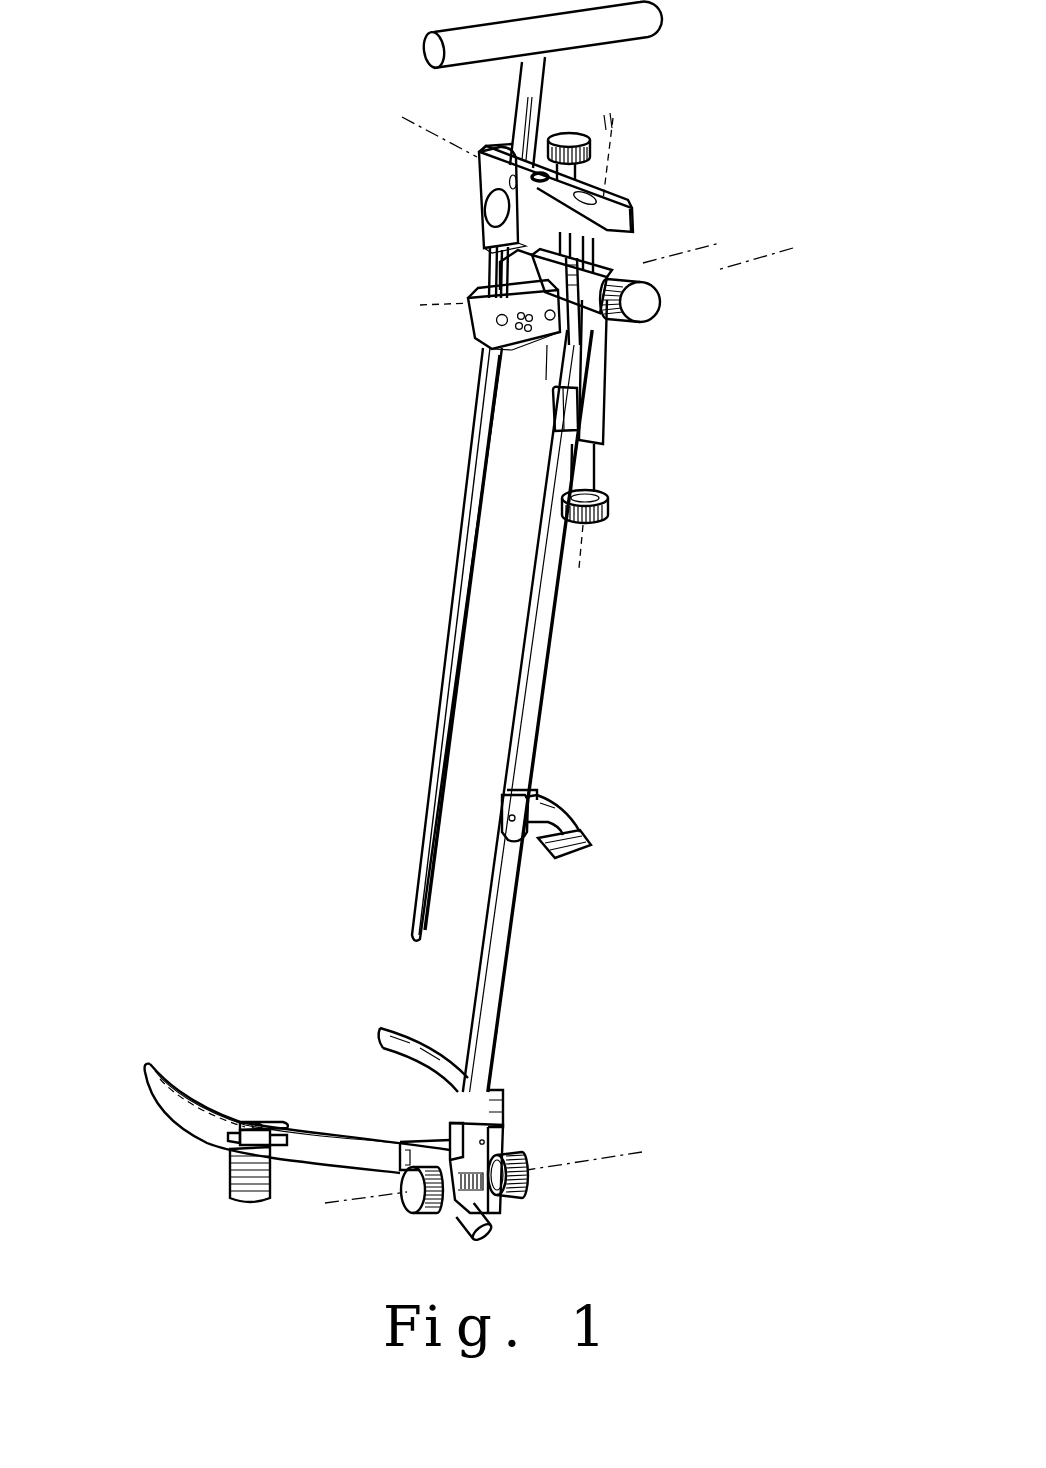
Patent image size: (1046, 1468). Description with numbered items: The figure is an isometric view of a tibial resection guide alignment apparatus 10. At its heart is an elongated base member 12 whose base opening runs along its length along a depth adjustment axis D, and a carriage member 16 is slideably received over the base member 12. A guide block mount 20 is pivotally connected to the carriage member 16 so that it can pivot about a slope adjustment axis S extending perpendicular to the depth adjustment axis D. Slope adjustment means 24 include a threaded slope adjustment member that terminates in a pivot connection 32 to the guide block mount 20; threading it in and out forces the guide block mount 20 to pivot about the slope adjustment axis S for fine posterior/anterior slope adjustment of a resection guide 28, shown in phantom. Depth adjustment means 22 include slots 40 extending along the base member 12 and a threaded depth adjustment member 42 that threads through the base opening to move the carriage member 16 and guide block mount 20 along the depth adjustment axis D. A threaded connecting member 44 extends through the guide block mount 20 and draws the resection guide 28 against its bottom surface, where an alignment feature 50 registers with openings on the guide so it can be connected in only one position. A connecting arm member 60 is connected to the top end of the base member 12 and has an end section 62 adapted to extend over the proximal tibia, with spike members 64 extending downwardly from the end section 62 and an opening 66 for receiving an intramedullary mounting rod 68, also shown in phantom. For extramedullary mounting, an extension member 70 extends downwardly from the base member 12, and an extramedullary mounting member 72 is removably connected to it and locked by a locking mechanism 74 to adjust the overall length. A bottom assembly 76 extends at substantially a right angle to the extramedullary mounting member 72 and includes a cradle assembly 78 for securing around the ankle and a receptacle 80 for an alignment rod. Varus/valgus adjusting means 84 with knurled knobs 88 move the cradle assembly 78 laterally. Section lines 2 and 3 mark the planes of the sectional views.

The tibial resection guide alignment apparatus 10 is at (300, 316).
The base member 12 is at (610, 373).
The carriage member 16 is at (643, 272).
The guide block mount 20 is at (545, 350).
The depth adjustment means 22 is at (636, 505).
The slope adjustment means 24 is at (670, 310).
The resection guide 28 is at (507, 350).
The pivot connection 32 is at (470, 310).
The slots 40 is at (622, 268).
The threaded depth adjustment member 42 is at (590, 480).
The connecting member 44 is at (577, 131).
The alignment feature 50 is at (567, 340).
The connecting arm member 60 is at (540, 180).
The end section 62 is at (477, 207).
The spike members 64 is at (495, 276).
The opening 66 is at (490, 147).
The intramedullary mounting rod 68 is at (442, 690).
The extension member 70 is at (540, 660).
The extramedullary mounting member 72 is at (500, 968).
The locking mechanism 74 is at (545, 800).
The bottom assembly 76 is at (537, 1123).
The cradle assembly 78 is at (182, 1132).
The receptacle 80 is at (490, 1224).
The varus/valgus adjusting means 84 is at (530, 1180).
The knurled knobs 88 is at (528, 1170).
The section line 2- 2 is at (402, 117).
The section line 3- 3 is at (609, 1133).
The depth adjustment axis D is at (615, 147).
The slope adjustment axis S is at (435, 310).